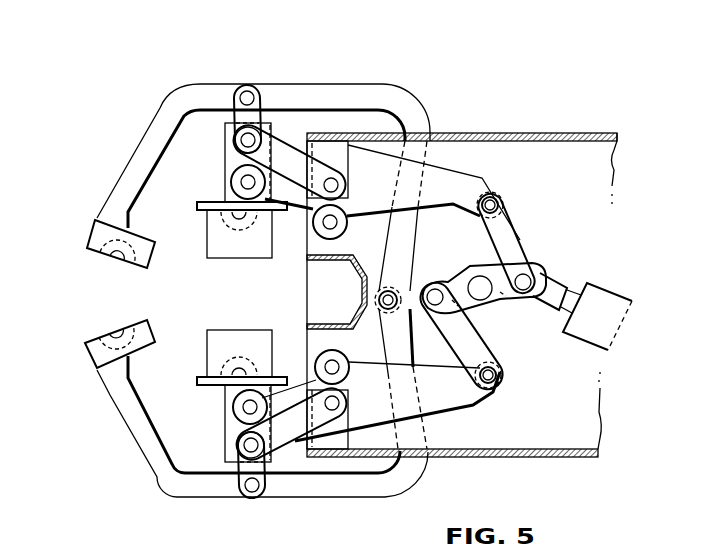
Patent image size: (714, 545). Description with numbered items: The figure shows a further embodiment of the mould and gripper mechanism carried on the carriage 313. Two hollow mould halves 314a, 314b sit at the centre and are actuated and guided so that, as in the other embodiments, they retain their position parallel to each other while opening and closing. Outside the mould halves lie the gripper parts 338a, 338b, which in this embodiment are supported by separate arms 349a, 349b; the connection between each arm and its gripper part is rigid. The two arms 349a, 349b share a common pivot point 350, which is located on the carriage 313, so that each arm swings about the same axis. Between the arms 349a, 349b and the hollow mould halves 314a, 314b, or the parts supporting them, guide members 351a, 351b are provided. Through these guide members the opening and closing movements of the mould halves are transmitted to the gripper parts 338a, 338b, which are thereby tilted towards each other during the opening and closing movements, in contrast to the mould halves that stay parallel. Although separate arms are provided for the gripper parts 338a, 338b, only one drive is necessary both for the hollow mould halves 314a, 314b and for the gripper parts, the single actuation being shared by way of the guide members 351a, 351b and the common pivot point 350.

The carriage 313 is at (477, 150).
The hollow mould half 314a is at (210, 333).
The hollow mould half 314b is at (210, 255).
The gripper part 338a is at (89, 340).
The gripper part 338b is at (90, 240).
The arm 349a is at (168, 478).
The arm 349b is at (167, 102).
The common pivot point 350 is at (396, 287).
The guide member 351a is at (270, 478).
The guide member 351b is at (262, 92).